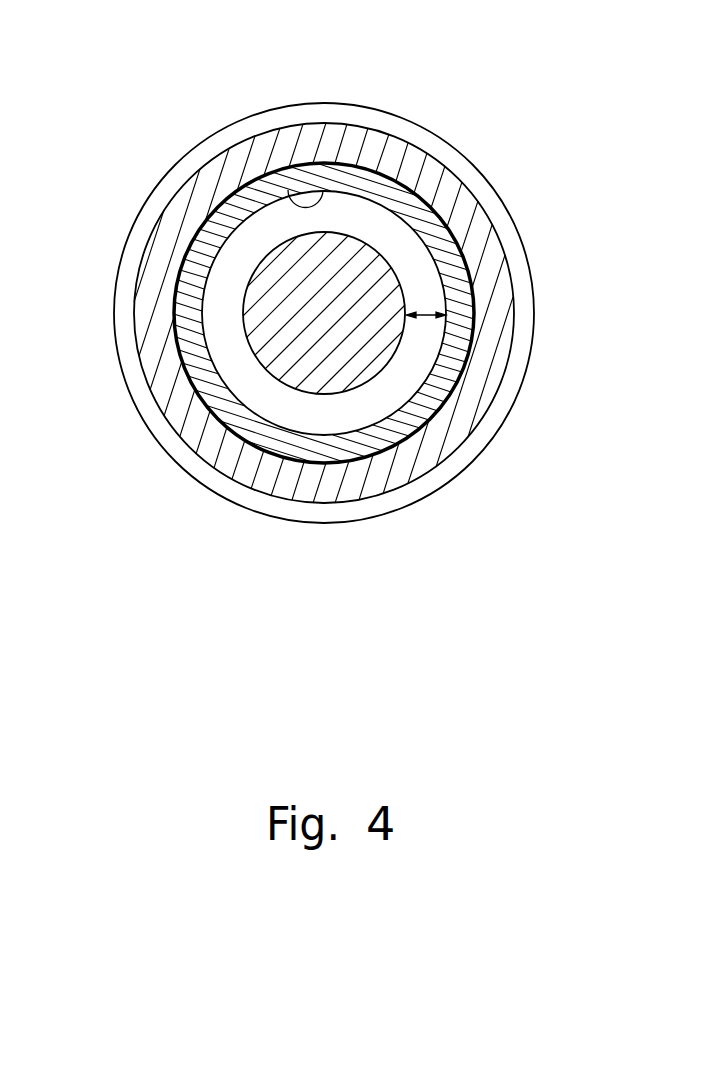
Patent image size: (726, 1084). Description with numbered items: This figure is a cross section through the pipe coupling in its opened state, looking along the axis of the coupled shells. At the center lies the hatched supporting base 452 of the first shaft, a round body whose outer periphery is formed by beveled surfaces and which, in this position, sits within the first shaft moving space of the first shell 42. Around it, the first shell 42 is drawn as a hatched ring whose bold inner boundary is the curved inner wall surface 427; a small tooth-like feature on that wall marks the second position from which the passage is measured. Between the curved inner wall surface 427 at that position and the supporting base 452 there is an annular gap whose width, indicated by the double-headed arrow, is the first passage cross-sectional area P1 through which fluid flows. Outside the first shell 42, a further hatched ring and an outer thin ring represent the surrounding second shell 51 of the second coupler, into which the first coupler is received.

The second shell 51 is at (435, 182).
The first shell 42 is at (363, 182).
The curved inner wall surface 427 is at (288, 190).
The supporting base 452 is at (341, 358).
The first passage cross-sectional area P1 is at (432, 315).